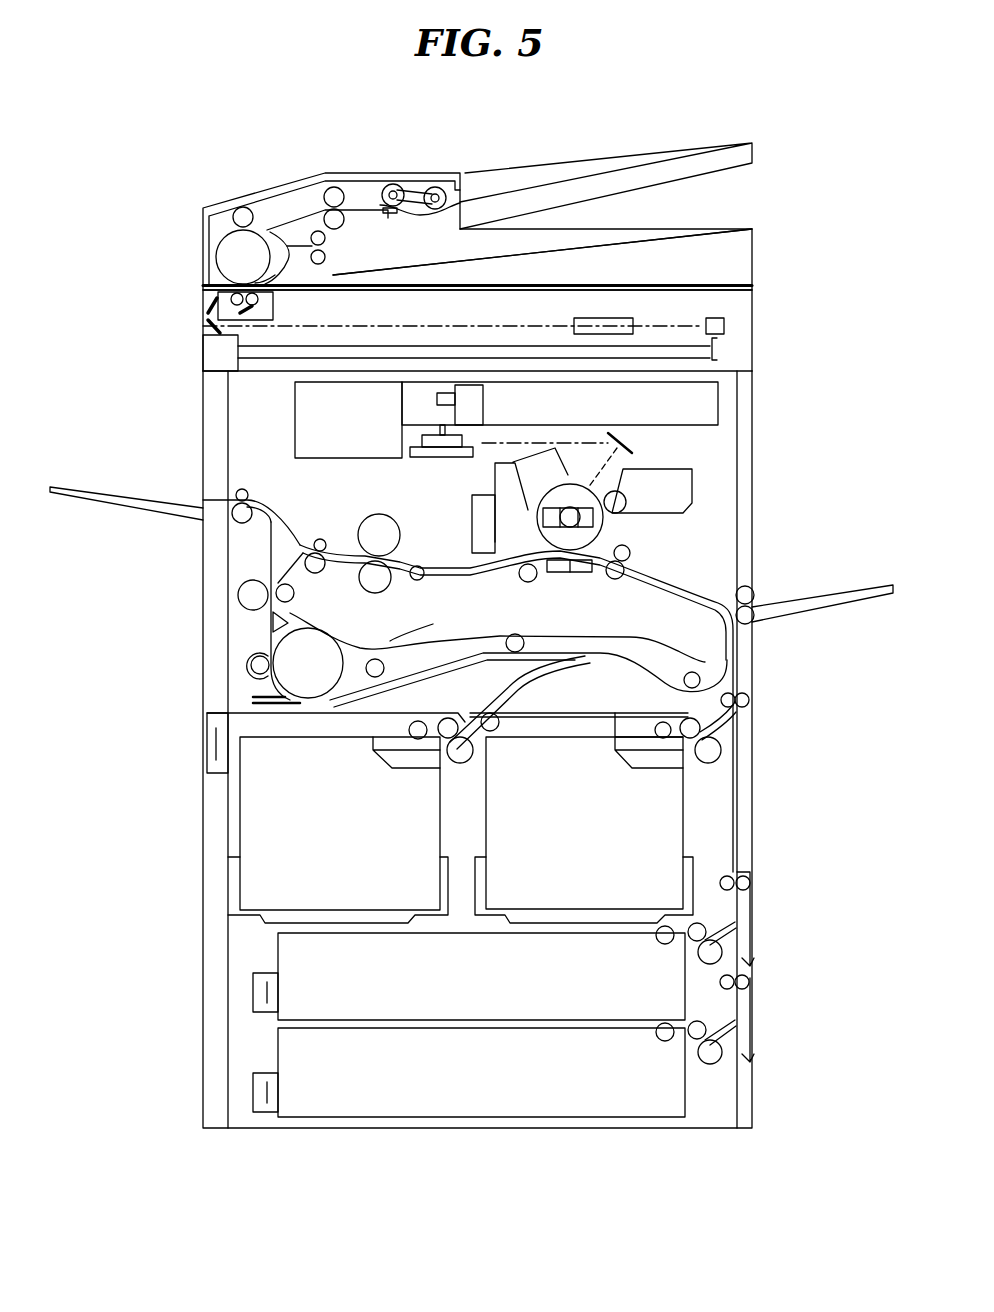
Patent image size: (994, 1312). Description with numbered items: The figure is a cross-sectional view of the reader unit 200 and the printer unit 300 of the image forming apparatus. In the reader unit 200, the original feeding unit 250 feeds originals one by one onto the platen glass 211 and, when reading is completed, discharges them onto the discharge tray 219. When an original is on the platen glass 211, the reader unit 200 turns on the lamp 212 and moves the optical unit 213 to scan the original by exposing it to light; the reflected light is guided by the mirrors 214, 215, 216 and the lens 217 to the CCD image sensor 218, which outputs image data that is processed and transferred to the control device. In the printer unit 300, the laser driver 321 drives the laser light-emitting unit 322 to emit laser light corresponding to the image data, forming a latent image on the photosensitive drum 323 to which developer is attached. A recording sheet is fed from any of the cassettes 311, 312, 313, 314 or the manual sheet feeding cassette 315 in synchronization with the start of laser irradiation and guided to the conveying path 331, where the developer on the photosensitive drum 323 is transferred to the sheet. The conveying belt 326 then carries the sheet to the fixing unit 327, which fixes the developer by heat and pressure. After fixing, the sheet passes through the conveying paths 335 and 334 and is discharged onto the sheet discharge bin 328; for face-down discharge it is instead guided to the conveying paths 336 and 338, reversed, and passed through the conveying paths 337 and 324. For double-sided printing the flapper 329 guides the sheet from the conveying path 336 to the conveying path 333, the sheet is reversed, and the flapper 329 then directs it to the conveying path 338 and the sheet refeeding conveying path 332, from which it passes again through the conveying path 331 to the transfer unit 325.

The reader unit 200 is at (830, 142).
The platen glass 211 is at (723, 285).
The lamp 212 is at (218, 250).
The optical unit 213 is at (275, 303).
The mirror 214 is at (250, 311).
The mirror 215 is at (217, 303).
The mirror 216 is at (207, 327).
The lens 217 is at (603, 318).
The CCD image sensor 218 is at (727, 325).
The discharge tray 219 is at (663, 238).
The original feeding unit 250 is at (463, 203).
The printer unit 300 is at (830, 370).
The cassette 311 is at (685, 815).
The cassette 312 is at (240, 807).
The cassette 313 is at (278, 955).
The cassette 314 is at (278, 1053).
The manual sheet feeding cassette 315 is at (757, 606).
The laser driver 321 is at (295, 430).
The laser light-emitting unit 322 is at (430, 458).
The photosensitive drum 323 is at (537, 521).
The conveying path 324 is at (695, 491).
The transfer unit 325 is at (582, 573).
The conveying belt 326 is at (482, 573).
The fixing unit 327 is at (362, 533).
The sheet discharge bin 328 is at (103, 493).
The flapper 329 is at (270, 627).
The conveying path 331 is at (648, 567).
The sheet refeeding conveying path 332 is at (417, 673).
The conveying path 333 is at (390, 641).
The conveying path 334 is at (215, 500).
The conveying path 335 is at (288, 522).
The conveying path 336 is at (293, 575).
The conveying path 337 is at (271, 553).
The conveying path 338 is at (257, 653).